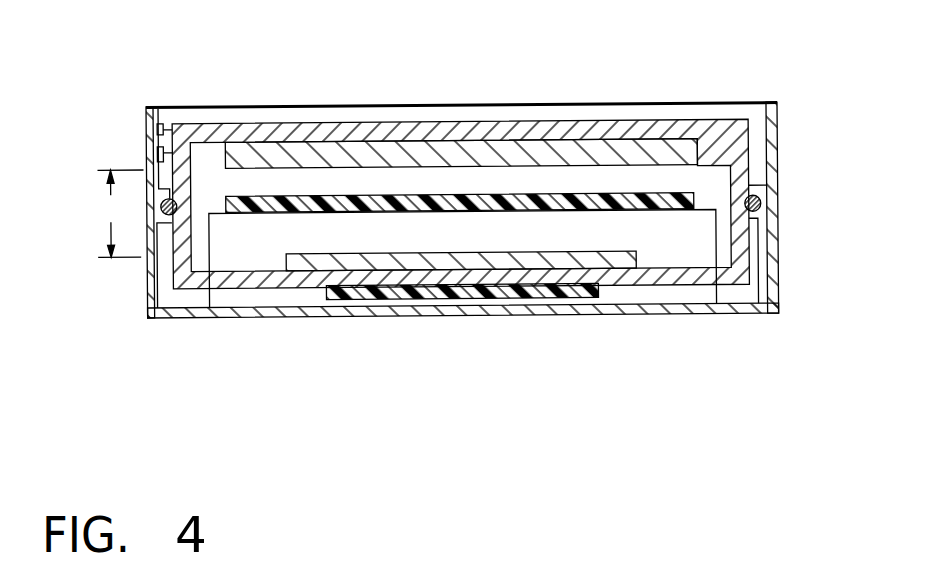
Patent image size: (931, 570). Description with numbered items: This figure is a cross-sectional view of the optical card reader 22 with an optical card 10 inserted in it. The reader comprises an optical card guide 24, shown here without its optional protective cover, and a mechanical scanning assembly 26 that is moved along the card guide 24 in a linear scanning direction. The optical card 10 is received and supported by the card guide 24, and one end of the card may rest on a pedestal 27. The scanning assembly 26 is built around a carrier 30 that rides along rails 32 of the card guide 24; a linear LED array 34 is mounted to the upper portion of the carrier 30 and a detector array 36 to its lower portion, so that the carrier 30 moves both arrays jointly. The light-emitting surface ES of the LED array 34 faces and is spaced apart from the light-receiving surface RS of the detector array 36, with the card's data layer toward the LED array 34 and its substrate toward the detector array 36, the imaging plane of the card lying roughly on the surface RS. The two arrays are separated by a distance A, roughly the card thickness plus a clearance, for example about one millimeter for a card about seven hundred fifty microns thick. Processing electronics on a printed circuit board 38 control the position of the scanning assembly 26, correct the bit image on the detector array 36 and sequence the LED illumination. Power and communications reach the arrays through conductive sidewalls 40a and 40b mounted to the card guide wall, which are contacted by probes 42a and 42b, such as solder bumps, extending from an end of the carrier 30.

The optical card 10 is at (685, 196).
The optical card reader 22 is at (643, 334).
The optical card guide 24 is at (523, 319).
The mechanical scanning assembly 26 is at (282, 119).
The pedestal 27 is at (285, 259).
The carrier 30 is at (312, 125).
The rails 32 is at (758, 208).
The linear LED array 34 is at (450, 155).
The detector array 36 is at (278, 266).
The printed circuit board 38 is at (382, 302).
The conductive sidewall 40a is at (159, 122).
The conductive sidewall 40b is at (171, 135).
The probe 42a is at (152, 130).
The probe 42b is at (152, 155).
The light-emitting surface ES is at (600, 176).
The light-receiving surface RS is at (437, 254).
The distance A is at (120, 213).